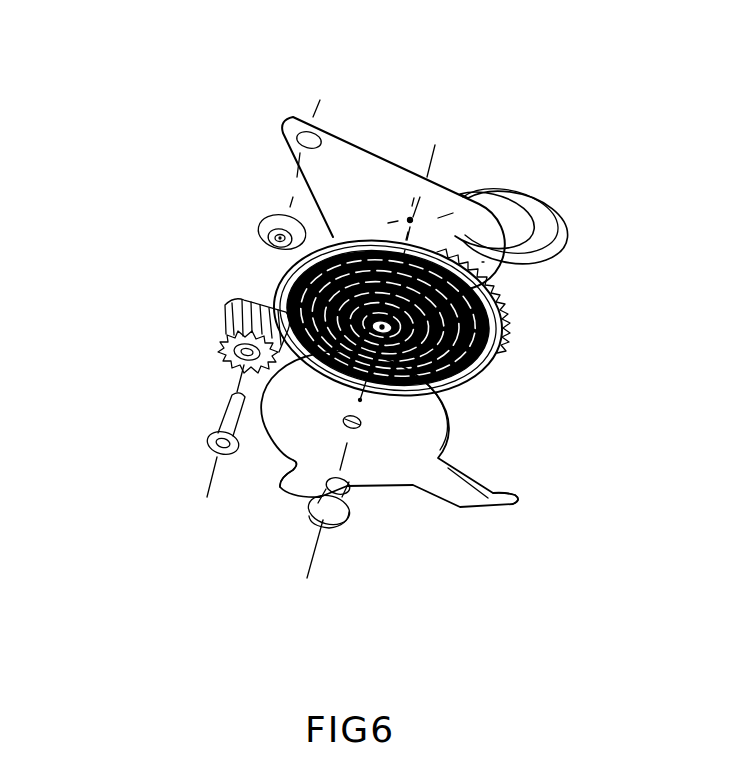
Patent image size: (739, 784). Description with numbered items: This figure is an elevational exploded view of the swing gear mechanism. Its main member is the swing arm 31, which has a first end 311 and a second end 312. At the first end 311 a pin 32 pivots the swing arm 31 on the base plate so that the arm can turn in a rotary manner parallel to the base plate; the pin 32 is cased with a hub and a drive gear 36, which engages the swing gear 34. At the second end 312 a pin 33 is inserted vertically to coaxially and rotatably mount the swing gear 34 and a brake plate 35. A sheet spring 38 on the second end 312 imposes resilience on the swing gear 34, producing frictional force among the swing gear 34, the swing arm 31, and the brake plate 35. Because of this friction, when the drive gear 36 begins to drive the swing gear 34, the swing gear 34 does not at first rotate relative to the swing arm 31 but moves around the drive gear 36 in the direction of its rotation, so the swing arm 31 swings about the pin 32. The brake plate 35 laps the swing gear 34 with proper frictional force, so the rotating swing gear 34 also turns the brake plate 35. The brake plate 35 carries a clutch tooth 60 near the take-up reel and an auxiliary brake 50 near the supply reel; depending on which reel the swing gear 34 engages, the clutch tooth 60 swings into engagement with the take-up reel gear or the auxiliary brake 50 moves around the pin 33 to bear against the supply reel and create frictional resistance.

The swing arm 31 is at (380, 138).
The first end 311 is at (300, 128).
The second end 312 is at (477, 260).
The sheet spring 38 is at (473, 213).
The swing gear 34 is at (510, 331).
The drive gear 36 is at (223, 333).
The pin 32 is at (207, 437).
The brake plate 35 is at (440, 440).
The clutch tooth 60 is at (523, 501).
The auxiliary brake 50 is at (277, 490).
The pin 33 is at (353, 533).